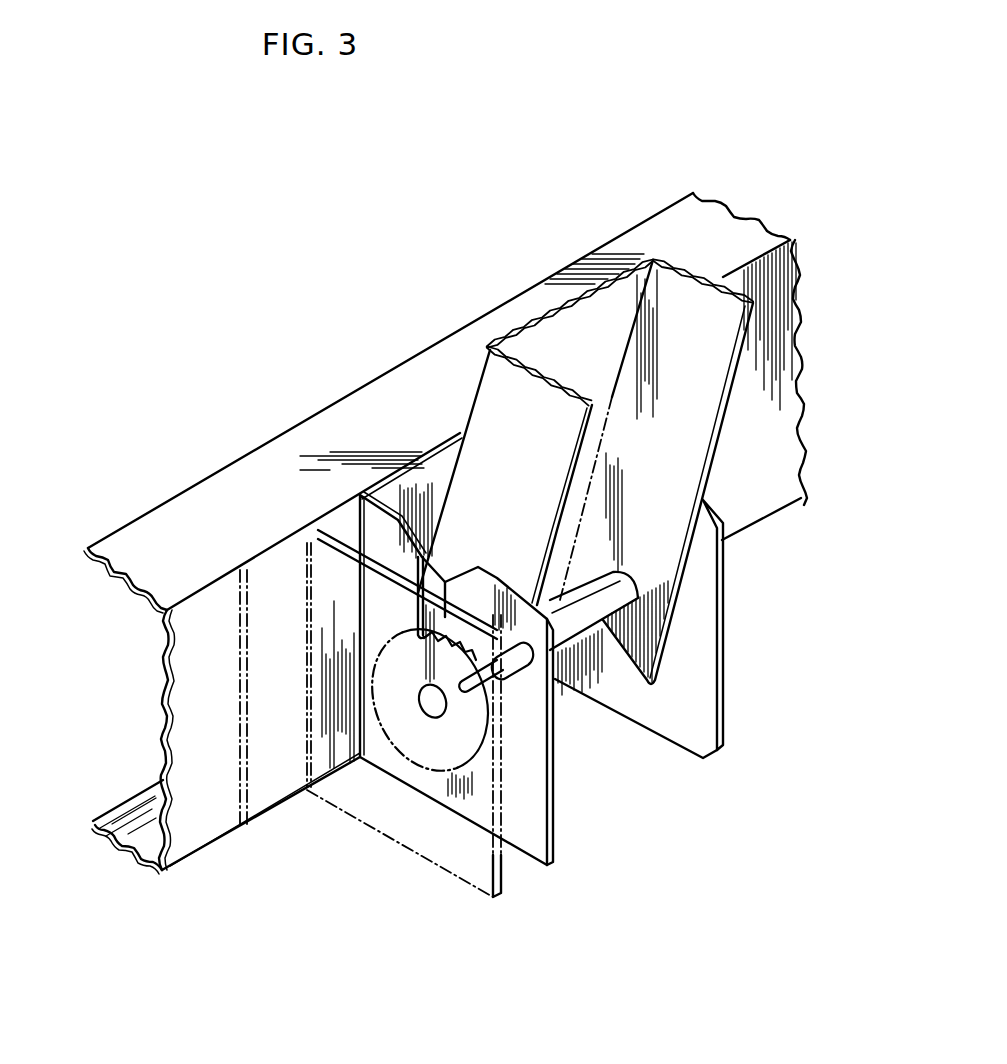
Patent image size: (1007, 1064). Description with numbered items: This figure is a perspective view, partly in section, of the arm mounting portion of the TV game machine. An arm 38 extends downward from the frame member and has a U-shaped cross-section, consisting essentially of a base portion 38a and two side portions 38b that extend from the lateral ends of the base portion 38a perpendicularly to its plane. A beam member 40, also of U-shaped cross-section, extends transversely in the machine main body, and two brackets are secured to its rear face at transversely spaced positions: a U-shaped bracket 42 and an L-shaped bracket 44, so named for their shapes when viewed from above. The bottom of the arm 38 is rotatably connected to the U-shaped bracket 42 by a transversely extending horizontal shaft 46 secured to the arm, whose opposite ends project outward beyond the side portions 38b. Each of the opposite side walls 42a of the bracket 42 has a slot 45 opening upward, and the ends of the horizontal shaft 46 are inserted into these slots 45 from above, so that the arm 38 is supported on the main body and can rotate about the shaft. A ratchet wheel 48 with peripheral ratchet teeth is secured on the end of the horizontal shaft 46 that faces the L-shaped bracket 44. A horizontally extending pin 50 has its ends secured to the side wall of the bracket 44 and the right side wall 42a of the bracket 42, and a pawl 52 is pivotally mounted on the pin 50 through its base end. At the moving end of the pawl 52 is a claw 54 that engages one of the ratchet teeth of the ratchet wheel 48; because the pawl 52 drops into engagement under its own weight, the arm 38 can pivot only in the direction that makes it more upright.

The arm 38 is at (706, 259).
The base portion 38a is at (598, 313).
The side portions 38b is at (483, 417).
The beam member 40 is at (230, 477).
The U-shaped bracket 42 is at (744, 568).
The side walls 42a is at (683, 740).
The L-shaped bracket 44 is at (362, 830).
The slot 45 is at (437, 590).
The horizontal shaft 46 is at (630, 638).
The ratchet wheel 48 is at (427, 767).
The pin 50 is at (500, 695).
The pawl 52 is at (462, 603).
The claw 54 is at (412, 637).